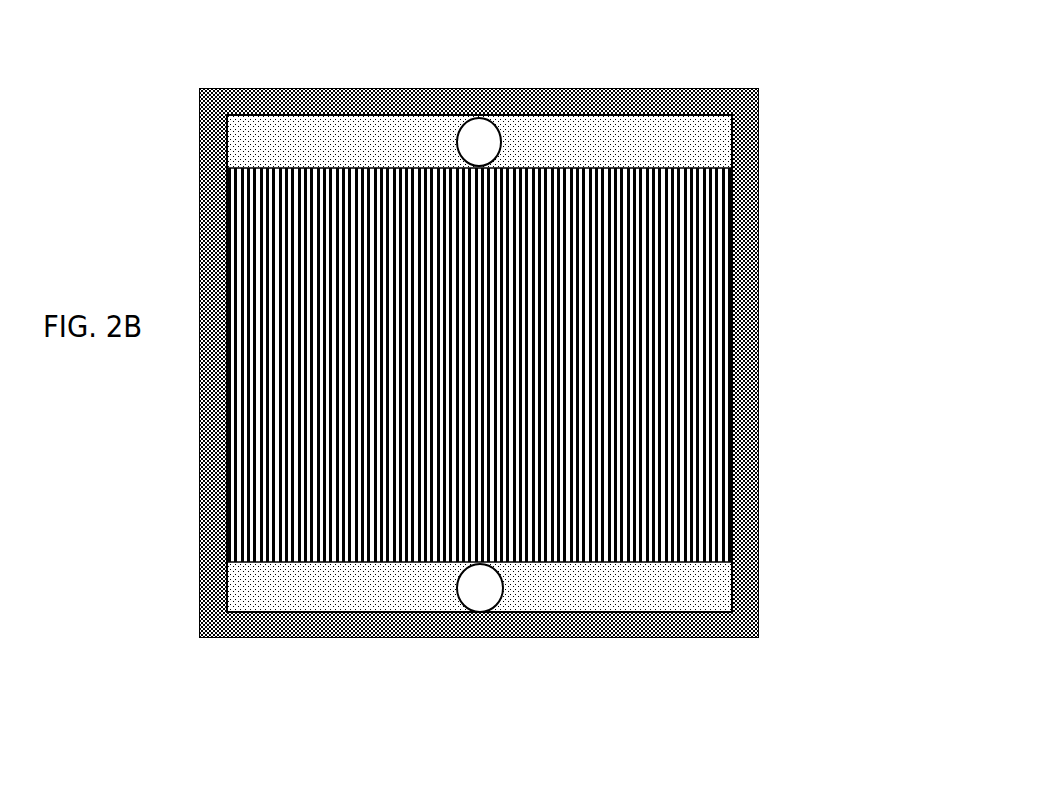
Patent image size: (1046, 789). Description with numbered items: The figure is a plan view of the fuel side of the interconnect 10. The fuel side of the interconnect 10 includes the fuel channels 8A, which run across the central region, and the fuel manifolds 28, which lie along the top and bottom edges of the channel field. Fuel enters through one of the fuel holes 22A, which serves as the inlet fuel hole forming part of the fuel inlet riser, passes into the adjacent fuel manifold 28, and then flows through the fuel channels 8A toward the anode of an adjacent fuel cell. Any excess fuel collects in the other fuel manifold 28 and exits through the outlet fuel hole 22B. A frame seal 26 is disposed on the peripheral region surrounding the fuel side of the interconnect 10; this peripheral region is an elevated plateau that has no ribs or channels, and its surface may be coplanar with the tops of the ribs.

The interconnect 10 is at (152, 211).
The fuel hole 22A is at (482, 118).
The outlet fuel hole 22B is at (480, 612).
The frame seal 26 is at (759, 483).
The fuel manifold 28 is at (732, 141).
The fuel channels 8A is at (677, 353).